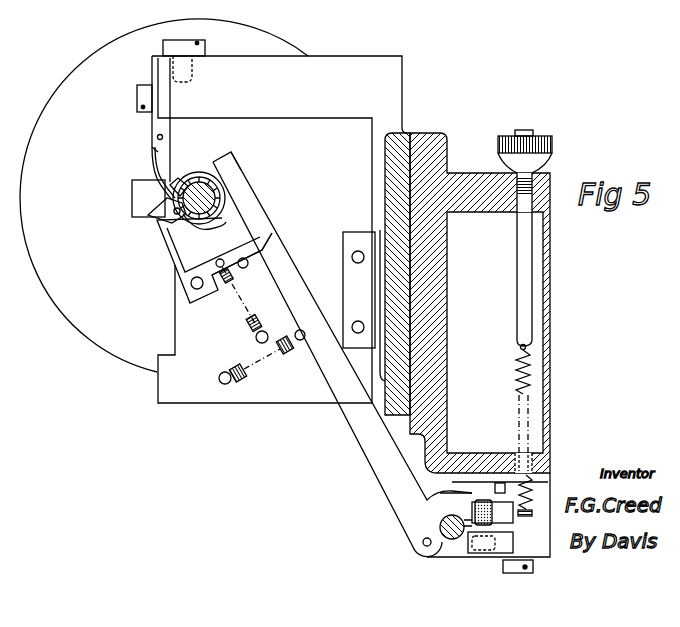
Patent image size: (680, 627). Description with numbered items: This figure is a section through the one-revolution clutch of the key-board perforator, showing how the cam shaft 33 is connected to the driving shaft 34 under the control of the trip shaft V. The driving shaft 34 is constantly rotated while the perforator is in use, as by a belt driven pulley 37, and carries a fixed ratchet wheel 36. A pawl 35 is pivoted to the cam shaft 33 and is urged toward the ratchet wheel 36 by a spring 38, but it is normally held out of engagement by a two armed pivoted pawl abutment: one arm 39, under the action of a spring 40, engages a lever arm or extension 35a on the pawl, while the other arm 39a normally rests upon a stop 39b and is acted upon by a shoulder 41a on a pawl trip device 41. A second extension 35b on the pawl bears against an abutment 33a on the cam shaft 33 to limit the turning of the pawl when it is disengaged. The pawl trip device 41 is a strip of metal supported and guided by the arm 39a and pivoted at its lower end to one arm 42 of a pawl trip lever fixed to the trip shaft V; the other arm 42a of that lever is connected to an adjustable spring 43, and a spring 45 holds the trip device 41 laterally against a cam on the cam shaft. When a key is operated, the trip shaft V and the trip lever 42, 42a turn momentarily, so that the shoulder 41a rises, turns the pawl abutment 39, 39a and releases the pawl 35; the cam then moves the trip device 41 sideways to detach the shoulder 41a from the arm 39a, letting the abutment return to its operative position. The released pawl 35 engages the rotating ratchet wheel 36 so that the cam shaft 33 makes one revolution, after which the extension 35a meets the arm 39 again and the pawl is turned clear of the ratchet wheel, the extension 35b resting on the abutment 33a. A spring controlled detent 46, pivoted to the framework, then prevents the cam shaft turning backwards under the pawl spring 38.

The cam shaft 33 is at (220, 203).
The abutment on the cam shaft 33a is at (173, 183).
The driving shaft 34 is at (221, 179).
The pawl 35 is at (132, 207).
The lever arm or extension on the pawl 35a is at (160, 218).
The extension on the pawl 35b is at (167, 197).
The ratchet wheel 36 is at (212, 182).
The belt driven pulley 37 is at (164, 195).
The spring 38 is at (222, 230).
The arm of the pawl abutment 39 is at (168, 252).
The arm of the pawl abutment 39a is at (262, 248).
The stop 39b is at (234, 312).
The spring 40 is at (244, 348).
The pawl trip device 41 is at (285, 295).
The shoulder on the pawl trip device 41a is at (250, 262).
The arm of the pawl trip lever 42 is at (503, 549).
The arm of the pawl trip lever 42a is at (510, 513).
The adjustable spring 43 is at (514, 373).
The spring 45 is at (258, 366).
The spring controlled detent 46 is at (153, 130).
The trip shaft V is at (452, 549).